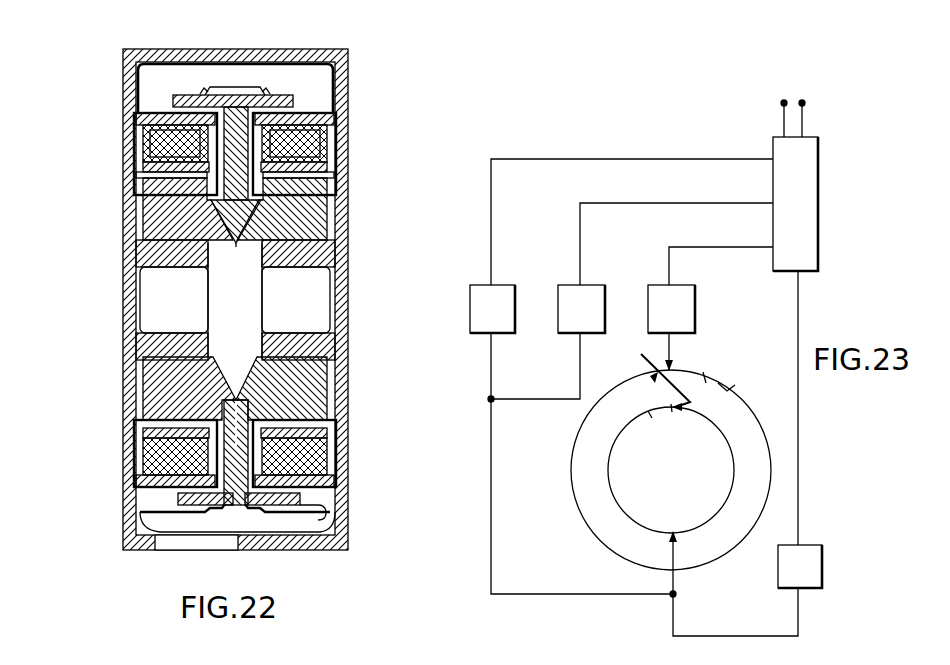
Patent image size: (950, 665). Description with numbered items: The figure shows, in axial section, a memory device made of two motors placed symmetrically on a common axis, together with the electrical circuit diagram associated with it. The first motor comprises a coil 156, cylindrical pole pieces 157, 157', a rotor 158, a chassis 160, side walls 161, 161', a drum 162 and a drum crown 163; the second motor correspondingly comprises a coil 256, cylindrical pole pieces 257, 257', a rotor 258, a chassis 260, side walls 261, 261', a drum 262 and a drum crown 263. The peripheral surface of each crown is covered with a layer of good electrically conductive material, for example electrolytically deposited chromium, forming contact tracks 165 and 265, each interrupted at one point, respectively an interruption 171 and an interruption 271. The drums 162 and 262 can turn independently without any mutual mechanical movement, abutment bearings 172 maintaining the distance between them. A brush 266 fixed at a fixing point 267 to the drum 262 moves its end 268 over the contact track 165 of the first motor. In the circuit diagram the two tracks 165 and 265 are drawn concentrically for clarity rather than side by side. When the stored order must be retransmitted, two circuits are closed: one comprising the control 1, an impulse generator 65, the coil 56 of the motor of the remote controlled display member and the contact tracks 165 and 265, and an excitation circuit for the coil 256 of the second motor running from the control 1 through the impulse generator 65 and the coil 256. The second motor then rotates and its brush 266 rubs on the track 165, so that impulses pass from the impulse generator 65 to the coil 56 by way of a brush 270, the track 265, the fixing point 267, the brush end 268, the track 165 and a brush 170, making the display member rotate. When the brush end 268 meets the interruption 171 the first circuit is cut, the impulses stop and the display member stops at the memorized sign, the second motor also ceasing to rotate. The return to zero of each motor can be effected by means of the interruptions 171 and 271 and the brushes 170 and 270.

In FIG. 23, the control 1 is at (808, 249).
In FIG. 23, the coil of the motor of the remote controlled display member 56 is at (671, 328).
In FIG. 23, the impulse generator 65 is at (800, 566).
In FIG. 22, the coil 156 is at (167, 171).
In FIG. 23, the coil 156 is at (492, 309).
In FIG. 22, the cylindrical pole piece 157 is at (148, 209).
In FIG. 22, the cylindrical pole piece 157' is at (149, 422).
In FIG. 22, the rotor 158 is at (165, 233).
In FIG. 22, the chassis 160 is at (153, 119).
In FIG. 22, the side wall 161 is at (135, 154).
In FIG. 22, the side wall 161' is at (131, 144).
In FIG. 22, the drum 162 is at (147, 243).
In FIG. 22, the drum crown 163 is at (173, 105).
In FIG. 22, the contact track 165 is at (182, 94).
In FIG. 23, the contact track 165 is at (771, 448).
In FIG. 22, the brush 170 is at (153, 517).
In FIG. 23, the brush 170 is at (674, 368).
In FIG. 23, the interruption 171 is at (712, 378).
In FIG. 22, the abutment bearing 172 is at (236, 205).
In FIG. 22, the coil 256 is at (334, 160).
In FIG. 23, the coil 256 is at (581, 309).
In FIG. 22, the cylindrical pole piece 257 is at (322, 209).
In FIG. 22, the cylindrical pole piece 257' is at (324, 422).
In FIG. 22, the rotor 258 is at (204, 86).
In FIG. 22, the chassis 260 is at (304, 118).
In FIG. 22, the side wall 261 is at (333, 143).
In FIG. 22, the side wall 261' is at (342, 162).
In FIG. 22, the drum 262 is at (337, 240).
In FIG. 22, the drum crown 263 is at (293, 104).
In FIG. 22, the contact track 265 is at (292, 97).
In FIG. 23, the contact track 265 is at (617, 502).
In FIG. 22, the brush 266 is at (238, 86).
In FIG. 23, the brush 266 is at (657, 373).
In FIG. 22, the fixing point of brush 267 is at (264, 86).
In FIG. 23, the fixing point of brush 267 is at (692, 403).
In FIG. 23, the brush end 268 is at (641, 377).
In FIG. 22, the brush 270 is at (313, 513).
In FIG. 23, the brush 270 is at (666, 536).
In FIG. 23, the interruption 271 is at (662, 405).